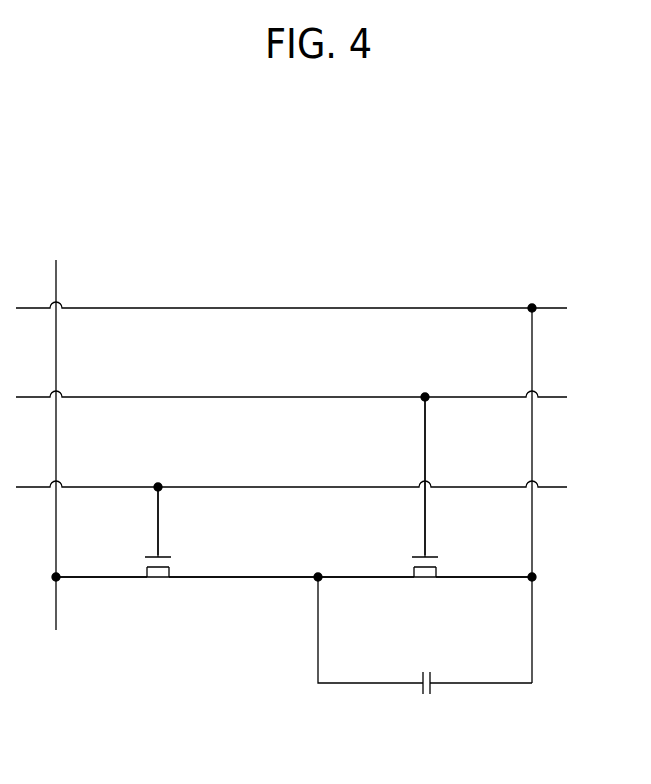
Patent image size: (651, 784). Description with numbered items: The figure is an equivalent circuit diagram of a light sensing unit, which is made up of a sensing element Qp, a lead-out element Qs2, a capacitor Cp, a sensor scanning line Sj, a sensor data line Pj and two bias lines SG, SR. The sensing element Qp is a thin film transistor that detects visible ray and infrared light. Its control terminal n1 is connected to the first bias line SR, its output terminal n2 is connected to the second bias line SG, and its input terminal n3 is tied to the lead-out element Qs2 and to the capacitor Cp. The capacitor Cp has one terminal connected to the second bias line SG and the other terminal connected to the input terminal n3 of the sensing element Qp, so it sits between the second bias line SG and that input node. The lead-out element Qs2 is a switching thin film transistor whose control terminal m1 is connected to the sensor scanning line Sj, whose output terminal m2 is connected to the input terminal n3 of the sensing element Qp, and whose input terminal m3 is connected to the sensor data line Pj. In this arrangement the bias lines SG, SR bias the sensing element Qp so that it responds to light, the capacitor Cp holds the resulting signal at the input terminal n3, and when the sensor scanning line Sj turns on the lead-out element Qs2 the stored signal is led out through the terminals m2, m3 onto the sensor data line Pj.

The sensor data line Pj is at (56, 426).
The second bias line SG is at (308, 308).
The first bias line SR is at (308, 397).
The sensor scanning line Sj is at (305, 487).
The lead-out element Qs2 is at (158, 548).
The control terminal of lead-out element m1 is at (176, 522).
The output terminal of lead-out element m2 is at (243, 560).
The input terminal of lead-out element m3 is at (101, 560).
The sensing element Qp is at (426, 502).
The control terminal of sensing element n1 is at (442, 477).
The output terminal of sensing element n2 is at (484, 560).
The input terminal of sensing element n3 is at (366, 560).
The capacitor Cp is at (425, 654).